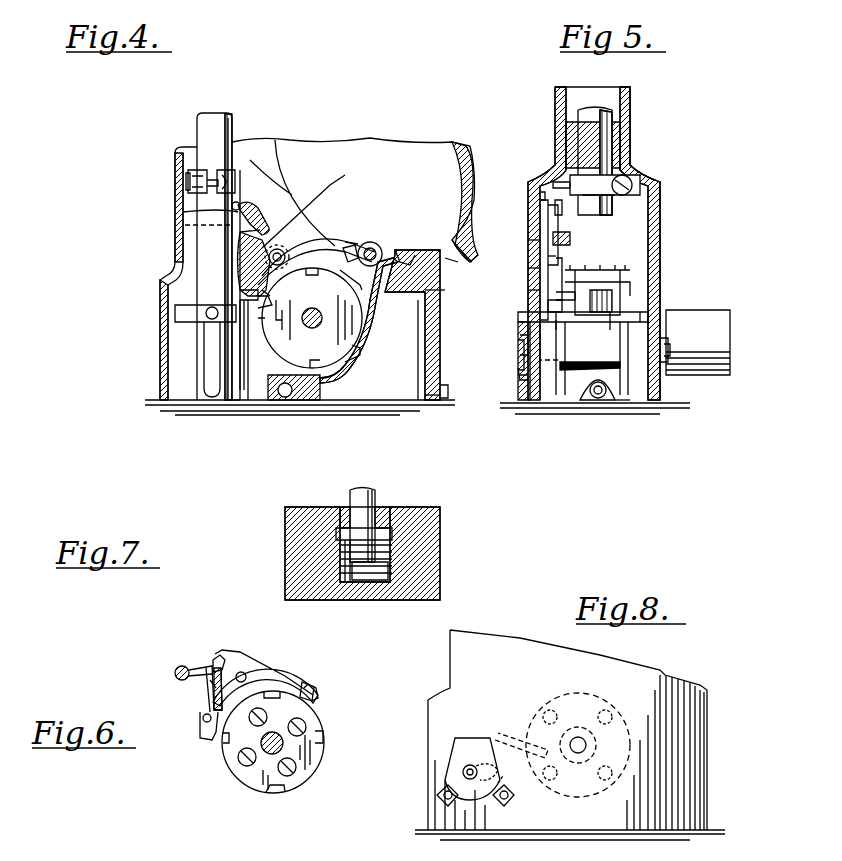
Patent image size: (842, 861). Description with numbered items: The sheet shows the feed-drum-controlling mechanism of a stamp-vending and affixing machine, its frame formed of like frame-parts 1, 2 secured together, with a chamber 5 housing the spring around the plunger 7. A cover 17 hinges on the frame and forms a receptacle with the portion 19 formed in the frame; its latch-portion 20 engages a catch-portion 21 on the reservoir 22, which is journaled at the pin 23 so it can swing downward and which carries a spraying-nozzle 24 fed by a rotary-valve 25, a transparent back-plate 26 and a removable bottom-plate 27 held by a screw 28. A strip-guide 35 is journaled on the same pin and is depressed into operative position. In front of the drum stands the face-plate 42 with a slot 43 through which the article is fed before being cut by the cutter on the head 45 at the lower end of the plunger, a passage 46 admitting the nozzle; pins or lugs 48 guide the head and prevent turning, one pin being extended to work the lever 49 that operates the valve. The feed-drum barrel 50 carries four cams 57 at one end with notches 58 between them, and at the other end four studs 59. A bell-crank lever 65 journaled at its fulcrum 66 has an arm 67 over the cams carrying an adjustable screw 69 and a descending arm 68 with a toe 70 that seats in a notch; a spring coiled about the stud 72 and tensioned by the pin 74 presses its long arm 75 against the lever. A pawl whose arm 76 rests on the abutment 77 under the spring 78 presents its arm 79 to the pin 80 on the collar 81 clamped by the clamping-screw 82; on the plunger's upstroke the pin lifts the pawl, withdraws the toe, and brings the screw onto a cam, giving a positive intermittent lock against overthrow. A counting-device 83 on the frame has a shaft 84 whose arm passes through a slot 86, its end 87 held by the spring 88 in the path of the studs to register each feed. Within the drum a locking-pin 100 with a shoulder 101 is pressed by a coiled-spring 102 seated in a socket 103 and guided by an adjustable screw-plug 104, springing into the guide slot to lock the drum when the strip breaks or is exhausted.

In FIG. 5, the frame-part 1 is at (660, 213).
In FIG. 8, the frame-part 1 is at (462, 662).
In FIG. 4, the frame-part 2 is at (176, 234).
In FIG. 5, the frame-part 2 is at (540, 206).
In FIG. 4, the chamber 5 is at (188, 130).
In FIG. 4, the plunger 7 is at (208, 128).
In FIG. 5, the plunger 7 is at (598, 156).
In FIG. 4, the cover 17 is at (465, 160).
In FIG. 4, the receptacle portion 19 is at (275, 152).
In FIG. 4, the latch-portion 20 is at (458, 245).
In FIG. 5, the latch-portion 20 is at (530, 250).
In FIG. 4, the catch-portion 21 is at (455, 265).
In FIG. 5, the catch-portion 21 is at (506, 270).
In FIG. 4, the reservoir 22 is at (440, 289).
In FIG. 5, the reservoir 22 is at (500, 295).
In FIG. 4, the journal pin 23 is at (403, 258).
In FIG. 4, the spraying-nozzle 24 is at (278, 398).
In FIG. 5, the spraying-nozzle 24 is at (596, 400).
In FIG. 4, the rotary-valve 25 is at (322, 384).
In FIG. 4, the transparent back-plate 26 is at (425, 337).
In FIG. 4, the removable bottom-plate 27 is at (412, 400).
In FIG. 4, the screw 28 is at (450, 384).
In FIG. 5, the screw 28 is at (489, 369).
In FIG. 4, the strip-guide 35 is at (378, 300).
In FIG. 4, the face-plate 42 is at (235, 400).
In FIG. 5, the face-plate 42 is at (622, 400).
In FIG. 4, the slot 43 is at (252, 362).
In FIG. 5, the slot 43 is at (590, 348).
In FIG. 4, the head 45 is at (178, 318).
In FIG. 5, the head 45 is at (605, 322).
In FIG. 5, the passage 46 is at (580, 396).
In FIG. 4, the pins or lugs 48 is at (208, 318).
In FIG. 5, the pins or lugs 48 is at (518, 318).
In FIG. 5, the lever 49 is at (520, 385).
In FIG. 4, the cylinder or barrel 50 is at (296, 318).
In FIG. 7, the cylinder or barrel 50 is at (285, 577).
In FIG. 6, the cylinder or barrel 50 is at (232, 752).
In FIG. 8, the cylinder or barrel 50 is at (586, 745).
In FIG. 4, the cams 57 is at (326, 310).
In FIG. 6, the cams 57 is at (316, 720).
In FIG. 4, the notches 58 is at (340, 330).
In FIG. 6, the notches 58 is at (326, 740).
In FIG. 8, the studs 59 is at (552, 712).
In FIG. 4, the bell-crank lever 65 is at (290, 244).
In FIG. 5, the bell-crank lever 65 is at (556, 270).
In FIG. 6, the bell-crank lever 65 is at (236, 662).
In FIG. 4, the fulcrum 66 is at (290, 240).
In FIG. 5, the fulcrum 66 is at (548, 255).
In FIG. 6, the fulcrum 66 is at (248, 675).
In FIG. 4, the arm 67 is at (349, 248).
In FIG. 6, the arm 67 is at (312, 685).
In FIG. 4, the arm 68 is at (258, 286).
In FIG. 5, the arm 68 is at (548, 306).
In FIG. 6, the arm 68 is at (206, 700).
In FIG. 4, the adjustable pin or screw 69 is at (365, 240).
In FIG. 6, the adjustable pin or screw 69 is at (318, 690).
In FIG. 4, the toe 70 is at (258, 320).
In FIG. 6, the toe 70 is at (205, 740).
In FIG. 4, the stud or screw 72 is at (246, 202).
In FIG. 5, the stud or screw 72 is at (562, 210).
In FIG. 4, the pin 74 is at (183, 206).
In FIG. 5, the pin 74 is at (541, 195).
In FIG. 4, the long arm of spring 75 is at (280, 215).
In FIG. 5, the long arm of spring 75 is at (548, 226).
In FIG. 4, the pawl arm 76 is at (240, 272).
In FIG. 5, the pawl arm 76 is at (570, 240).
In FIG. 6, the pawl arm 76 is at (212, 680).
In FIG. 4, the abutment 77 is at (270, 282).
In FIG. 5, the abutment 77 is at (556, 292).
In FIG. 6, the abutment 77 is at (210, 684).
In FIG. 4, the spring 78 is at (296, 292).
In FIG. 5, the spring 78 is at (590, 275).
In FIG. 6, the spring 78 is at (203, 720).
In FIG. 4, the pawl arm 79 is at (251, 264).
In FIG. 6, the pawl arm 79 is at (210, 660).
In FIG. 4, the pin 80 is at (188, 181).
In FIG. 5, the pin 80 is at (556, 185).
In FIG. 6, the pin 80 is at (180, 667).
In FIG. 4, the collar 81 is at (189, 172).
In FIG. 5, the collar 81 is at (608, 188).
In FIG. 4, the clamping-screw 82 is at (186, 178).
In FIG. 5, the clamping-screw 82 is at (640, 183).
In FIG. 5, the counting-device 83 is at (730, 334).
In FIG. 8, the counting-device 83 is at (468, 740).
In FIG. 8, the shaft 84 is at (462, 774).
In FIG. 8, the slot 86 is at (494, 748).
In FIG. 8, the arm end 87 is at (512, 772).
In FIG. 5, the spring 88 is at (668, 345).
In FIG. 7, the locking-pin 100 is at (376, 496).
In FIG. 7, the disk or shoulder 101 is at (392, 534).
In FIG. 7, the coiled-spring 102 is at (392, 556).
In FIG. 7, the socket 103 is at (390, 572).
In FIG. 7, the screw-plug 104 is at (385, 513).